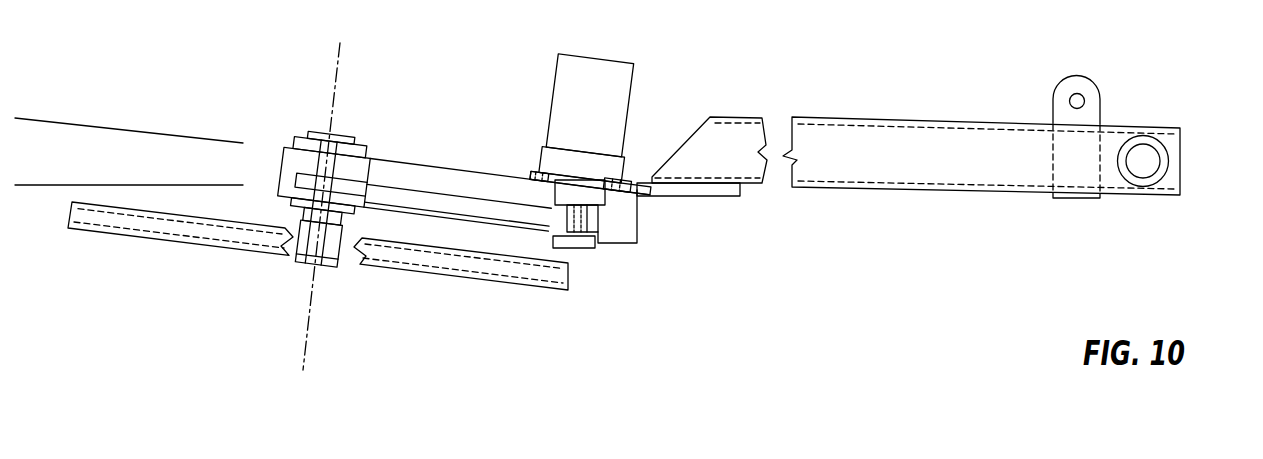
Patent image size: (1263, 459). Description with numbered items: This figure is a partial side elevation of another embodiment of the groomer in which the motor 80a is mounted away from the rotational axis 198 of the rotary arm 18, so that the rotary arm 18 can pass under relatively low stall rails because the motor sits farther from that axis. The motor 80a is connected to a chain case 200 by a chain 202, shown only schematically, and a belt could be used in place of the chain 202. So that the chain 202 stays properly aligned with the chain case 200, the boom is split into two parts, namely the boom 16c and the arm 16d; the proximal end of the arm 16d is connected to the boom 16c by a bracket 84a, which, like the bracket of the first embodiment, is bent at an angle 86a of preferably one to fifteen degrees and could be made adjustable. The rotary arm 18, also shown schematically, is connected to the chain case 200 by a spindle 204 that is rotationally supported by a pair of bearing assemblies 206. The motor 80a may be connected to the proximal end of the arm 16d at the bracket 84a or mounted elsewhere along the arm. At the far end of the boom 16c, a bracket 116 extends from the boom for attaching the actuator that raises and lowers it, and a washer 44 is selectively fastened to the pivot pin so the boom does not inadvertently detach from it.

The angle 86a is at (52, 238).
The rotational axis 198 is at (342, 70).
The chain case 200 is at (376, 134).
The arm 16d is at (446, 178).
The spindle 204 is at (325, 127).
The bearing assemblies 206 is at (300, 140).
The motor 80a is at (613, 93).
The chain 202 is at (524, 213).
The bracket 84a is at (698, 190).
The boom 16c is at (832, 174).
The bracket 116 is at (1088, 88).
The washer 44 is at (1160, 173).
The rotary arm 18 is at (138, 222).